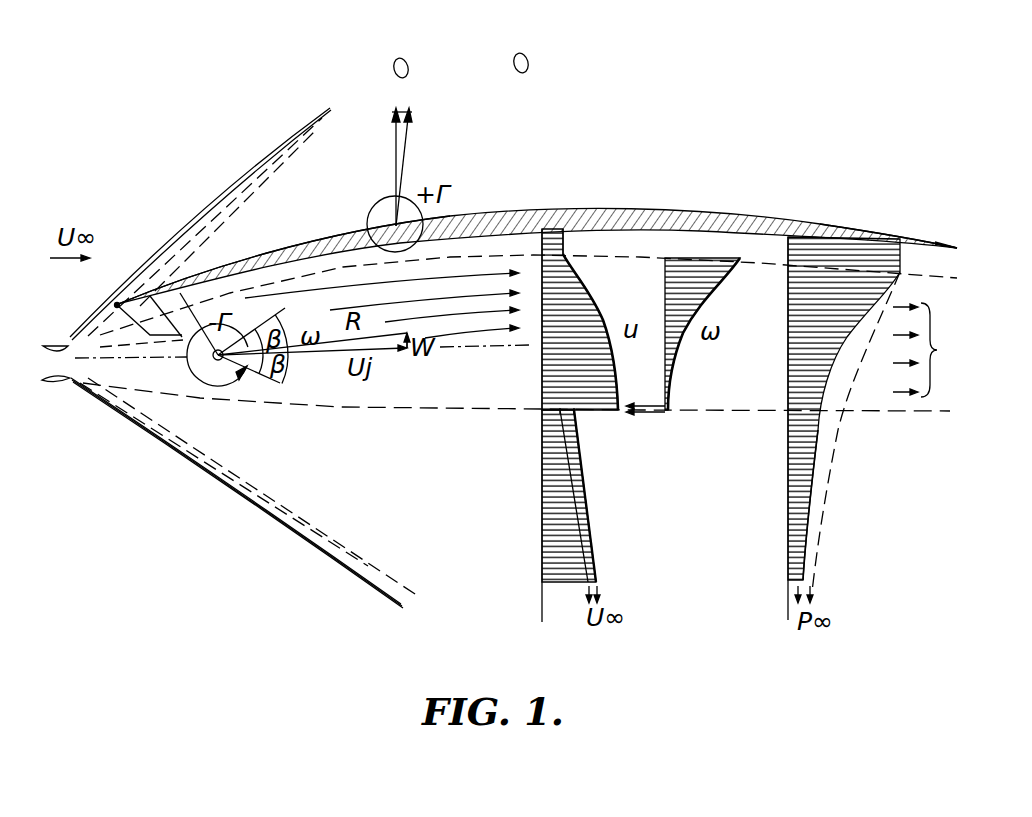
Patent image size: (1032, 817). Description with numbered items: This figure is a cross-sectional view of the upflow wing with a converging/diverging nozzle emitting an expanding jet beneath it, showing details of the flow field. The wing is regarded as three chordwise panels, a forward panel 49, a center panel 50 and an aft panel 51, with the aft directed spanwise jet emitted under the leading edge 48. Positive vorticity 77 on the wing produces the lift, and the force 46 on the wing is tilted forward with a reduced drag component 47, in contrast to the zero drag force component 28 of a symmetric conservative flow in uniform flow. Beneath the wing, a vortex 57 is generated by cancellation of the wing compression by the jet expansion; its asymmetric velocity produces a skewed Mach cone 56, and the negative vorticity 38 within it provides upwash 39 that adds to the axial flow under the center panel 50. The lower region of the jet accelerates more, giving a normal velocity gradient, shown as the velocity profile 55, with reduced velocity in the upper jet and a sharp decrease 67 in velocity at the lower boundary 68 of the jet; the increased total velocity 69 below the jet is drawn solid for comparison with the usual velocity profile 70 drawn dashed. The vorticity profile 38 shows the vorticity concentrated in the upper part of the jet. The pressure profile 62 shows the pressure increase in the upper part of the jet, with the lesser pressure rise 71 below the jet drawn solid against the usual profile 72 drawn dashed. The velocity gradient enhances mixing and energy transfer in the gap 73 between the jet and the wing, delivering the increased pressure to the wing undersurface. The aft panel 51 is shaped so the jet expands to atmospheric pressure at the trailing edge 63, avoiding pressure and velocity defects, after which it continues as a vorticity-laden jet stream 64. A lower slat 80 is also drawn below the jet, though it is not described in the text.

The drag force component 28 is at (521, 52).
The negative vorticity 38 is at (713, 283).
The upwash 39 is at (432, 343).
The force on the wing 46 is at (405, 145).
The drag force component 47 is at (403, 61).
The leading edge 48 is at (117, 303).
The forward panel 49 is at (277, 243).
The center panel 50 is at (598, 212).
The aft panel 51 is at (833, 228).
The velocity profile 55 is at (602, 309).
The skewed Mach cone 56 is at (284, 310).
The vortex 57 is at (196, 366).
The pressure profile 62 is at (838, 354).
The trailing edge 63 is at (957, 250).
The vorticity-laden jet stream 64 is at (917, 350).
The sharp decrease in velocity 67 is at (599, 412).
The lower boundary of the jet 68 is at (363, 410).
The increased total velocity 69 is at (593, 529).
The usual velocity profile 70 is at (594, 563).
The lesser pressure rise 71 is at (814, 447).
The usual pressure profile 72 is at (823, 512).
The gap 73 is at (564, 246).
The positive vorticity 77 is at (378, 192).
The lower slat 80 is at (157, 449).